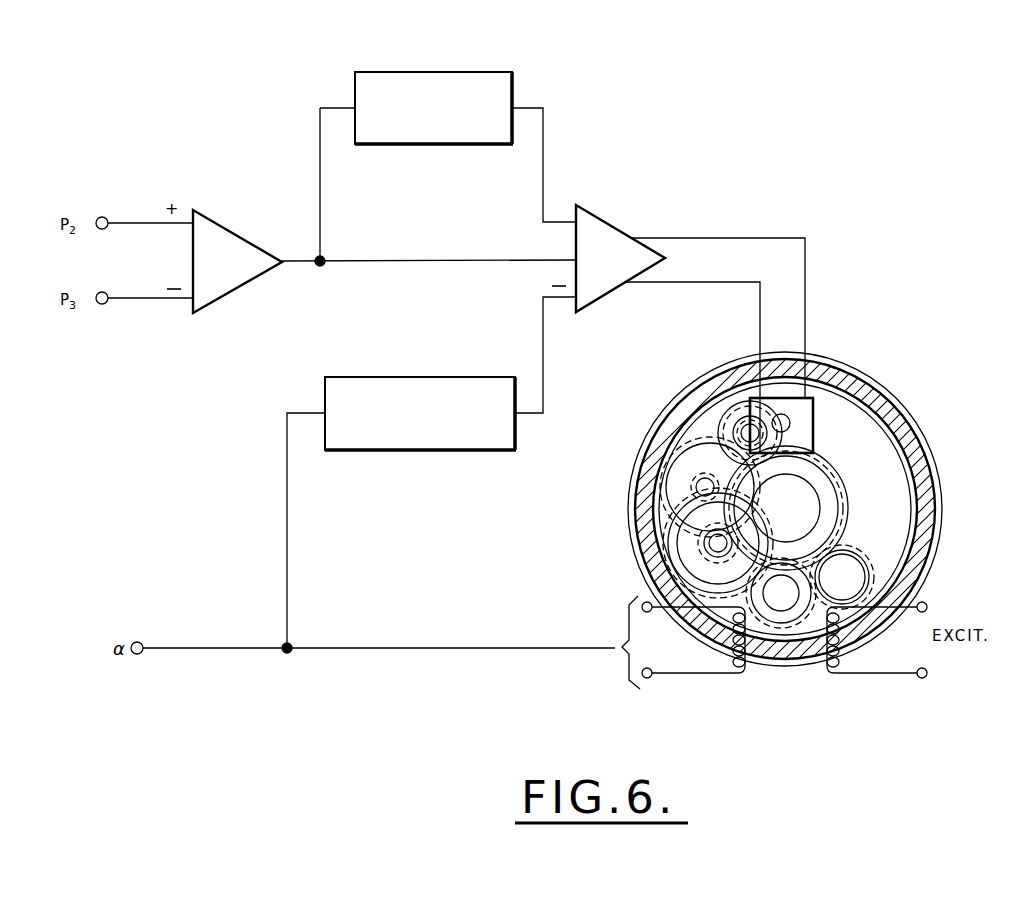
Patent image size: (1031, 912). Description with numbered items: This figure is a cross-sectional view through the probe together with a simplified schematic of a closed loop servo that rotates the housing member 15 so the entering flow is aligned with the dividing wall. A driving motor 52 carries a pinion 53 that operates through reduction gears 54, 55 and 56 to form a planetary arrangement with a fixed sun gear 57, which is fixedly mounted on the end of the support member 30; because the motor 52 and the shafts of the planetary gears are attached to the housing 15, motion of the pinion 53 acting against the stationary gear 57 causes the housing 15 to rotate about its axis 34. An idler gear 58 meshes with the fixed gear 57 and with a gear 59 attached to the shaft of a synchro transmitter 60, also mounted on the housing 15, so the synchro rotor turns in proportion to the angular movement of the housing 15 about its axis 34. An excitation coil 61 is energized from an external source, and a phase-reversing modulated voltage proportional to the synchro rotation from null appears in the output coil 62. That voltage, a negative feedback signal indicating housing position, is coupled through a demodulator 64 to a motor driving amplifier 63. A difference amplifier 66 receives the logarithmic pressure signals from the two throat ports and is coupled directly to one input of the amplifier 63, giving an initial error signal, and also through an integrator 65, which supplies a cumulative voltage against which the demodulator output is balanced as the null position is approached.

The housing member 15 is at (898, 408).
The support member 30 is at (690, 560).
The axis 34 is at (786, 510).
The driving motor 52 is at (818, 440).
The pinion 53 is at (787, 423).
The reduction gear 54 is at (730, 405).
The reduction gear 55 is at (685, 440).
The reduction gear 56 is at (662, 522).
The fixed sun gear 57 is at (830, 520).
The idler gear 58 is at (862, 552).
The gear 59 is at (700, 590).
The synchro transmitter 60 is at (780, 603).
The synchro excitation coil 61 is at (838, 673).
The output coil 62 is at (732, 673).
The motor driving amplifier 63 is at (609, 228).
The demodulator 64 is at (416, 377).
The integrator 65 is at (433, 72).
The difference amplifier 66 is at (239, 234).